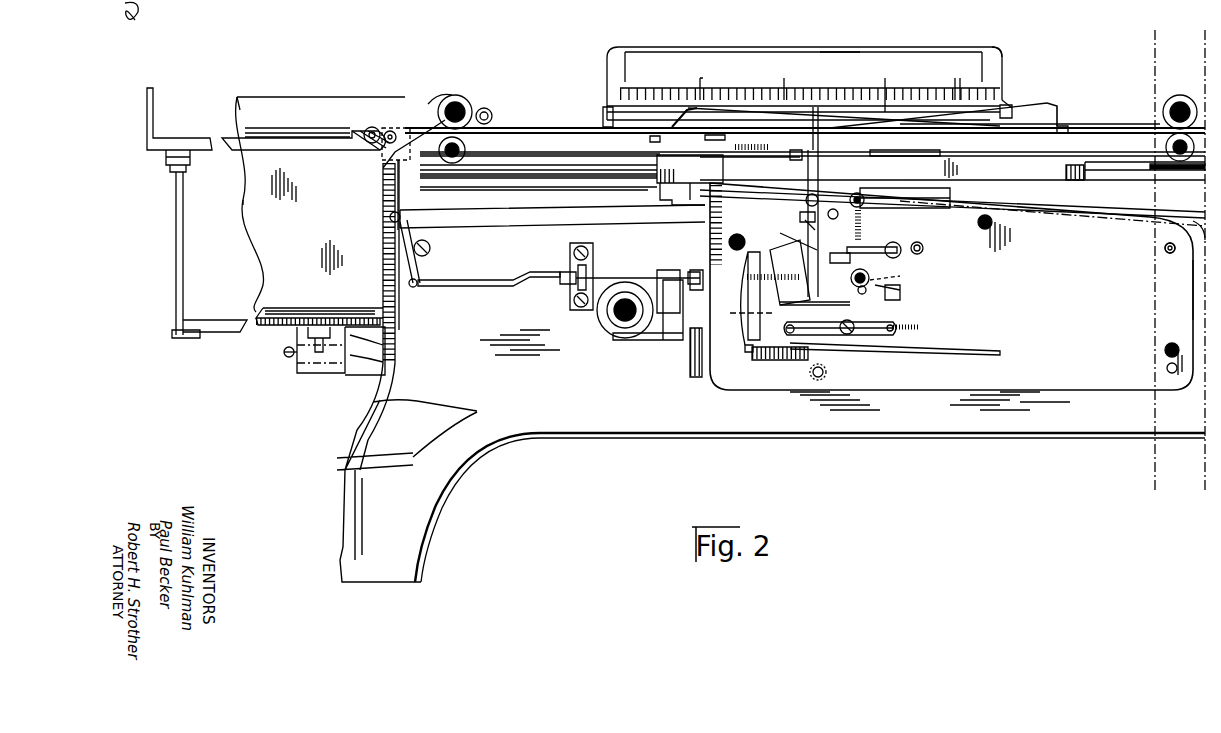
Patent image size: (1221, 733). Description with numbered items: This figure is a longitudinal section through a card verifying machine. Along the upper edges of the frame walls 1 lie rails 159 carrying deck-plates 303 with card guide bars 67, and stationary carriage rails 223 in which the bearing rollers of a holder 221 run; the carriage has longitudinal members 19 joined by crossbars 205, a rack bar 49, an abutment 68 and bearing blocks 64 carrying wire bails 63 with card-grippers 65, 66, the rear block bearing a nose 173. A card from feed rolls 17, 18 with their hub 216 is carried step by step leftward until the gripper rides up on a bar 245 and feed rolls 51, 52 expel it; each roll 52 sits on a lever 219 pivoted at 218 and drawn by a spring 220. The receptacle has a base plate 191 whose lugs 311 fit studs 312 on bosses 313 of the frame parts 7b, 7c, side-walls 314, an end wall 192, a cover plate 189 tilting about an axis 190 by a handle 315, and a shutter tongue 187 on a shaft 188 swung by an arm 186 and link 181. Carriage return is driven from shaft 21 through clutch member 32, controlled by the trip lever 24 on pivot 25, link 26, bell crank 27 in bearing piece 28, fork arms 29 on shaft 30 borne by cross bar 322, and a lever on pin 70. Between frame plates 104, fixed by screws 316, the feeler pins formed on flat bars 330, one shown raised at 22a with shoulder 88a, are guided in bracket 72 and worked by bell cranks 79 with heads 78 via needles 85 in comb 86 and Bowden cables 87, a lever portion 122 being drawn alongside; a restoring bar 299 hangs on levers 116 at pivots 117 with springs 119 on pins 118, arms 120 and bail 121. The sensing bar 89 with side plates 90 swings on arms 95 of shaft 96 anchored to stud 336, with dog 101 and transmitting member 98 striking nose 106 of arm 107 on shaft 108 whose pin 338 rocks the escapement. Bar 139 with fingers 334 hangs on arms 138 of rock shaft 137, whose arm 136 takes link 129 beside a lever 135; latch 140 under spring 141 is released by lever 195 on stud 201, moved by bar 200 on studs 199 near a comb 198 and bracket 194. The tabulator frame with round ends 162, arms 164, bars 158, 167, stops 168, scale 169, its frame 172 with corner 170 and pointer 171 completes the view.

The frame wall 1 is at (407, 472).
The body portion 7b is at (246, 114).
The body plate 7c is at (302, 310).
The feed roll 17 is at (1192, 100).
The feed roll 18 is at (1166, 143).
The longitudinal member 19 is at (1003, 172).
The shaft 21 is at (620, 322).
The feeler pin 22a is at (830, 88).
The two-armed lever 24 is at (410, 224).
The horizontal pivot 25 is at (430, 256).
The link 26 is at (465, 283).
The bell crank 27 is at (575, 274).
The bearing piece 28 is at (590, 256).
The arm 29 is at (646, 278).
The vertical shaft 30 is at (672, 340).
The toothed clutch member 32 is at (598, 315).
The rack bar 49 is at (700, 222).
The feed roll 51 is at (466, 150).
The feed roll 52 is at (451, 95).
The wire bail 63 is at (1058, 105).
The bearing block 64 is at (945, 100).
The card-gripper 65 is at (1067, 126).
The card-gripper 66 is at (700, 78).
The guide bar 67 is at (1140, 128).
The abutment 68 is at (1095, 185).
The horizontal pin 70 is at (1167, 244).
The bracket 72 is at (846, 321).
The bifurcated head 78 is at (775, 262).
The bell crank 79 is at (737, 232).
The lever end 85 is at (745, 350).
The comb 86 is at (768, 358).
The Bowden cable 87 is at (945, 350).
The shoulder 88a is at (810, 216).
The sensing bail bar 89 is at (864, 201).
The side plate 90 is at (800, 216).
The arm 95 is at (921, 245).
The shaft 96 is at (920, 252).
The transmitting member 98 is at (868, 274).
The dog 101 is at (843, 256).
The frame plate 104 is at (1133, 400).
The nose 106 is at (864, 294).
The arm 107 is at (900, 298).
The shaft 108 is at (890, 288).
The lever 116 is at (830, 330).
The pivot 117 is at (858, 330).
The pin 118 is at (912, 330).
The spring 119 is at (890, 331).
The arm 120 is at (786, 329).
The bail 121 is at (690, 288).
The lever 122 is at (748, 340).
The link 129 is at (1120, 215).
The lever 135 is at (866, 188).
The arm 136 is at (862, 224).
The rock shaft 137 is at (895, 242).
The arm 138 is at (833, 208).
The bar 139 is at (819, 150).
The latch 140 is at (818, 197).
The spring 141 is at (806, 194).
The bar 158 is at (1010, 105).
The bar or rail 159 is at (521, 150).
The round end 162 is at (1015, 115).
The arm 164 is at (1006, 98).
The bar 167 is at (657, 105).
The tabulator stop 168 is at (770, 110).
The scale 169 is at (832, 50).
The frame corner 170 is at (1000, 48).
The pointer 171 is at (1190, 290).
The frame 172 is at (607, 102).
The nose 173 is at (885, 78).
The link 181 is at (1185, 212).
The arm 186 is at (385, 172).
The shutter tongue 187 is at (372, 128).
The shutter shaft 188 is at (325, 138).
The horizontal plate 189 is at (262, 134).
The axis 190 is at (272, 130).
The base plate 191 is at (186, 338).
The end wall 192 is at (176, 253).
The bracket 194 is at (572, 118).
The two-armed lever 195 is at (800, 158).
The comb 198 is at (750, 150).
The guide stud 199 is at (660, 140).
The bar 200 is at (712, 140).
The stud 201 is at (800, 160).
The crossbar 205 is at (678, 176).
The roller hub 216 is at (1178, 104).
The pivot 218 is at (487, 108).
The lever 219 is at (392, 130).
The spring 220 is at (366, 129).
The holder 221 is at (1112, 165).
The carriage rail 223 is at (548, 180).
The bar 245 is at (430, 100).
The restoring bar 299 is at (778, 362).
The deck-plate 303 is at (1105, 124).
The perforated lug 311 is at (300, 373).
The stud 312 is at (284, 355).
The boss 313 is at (350, 378).
The side-wall 314 is at (240, 110).
The handle 315 is at (148, 100).
The screw 316 is at (1166, 366).
The cross bar 322 is at (696, 378).
The flat bar 330 is at (792, 272).
The finger 334 is at (890, 150).
The stud 336 is at (905, 186).
The pin 338 is at (882, 280).